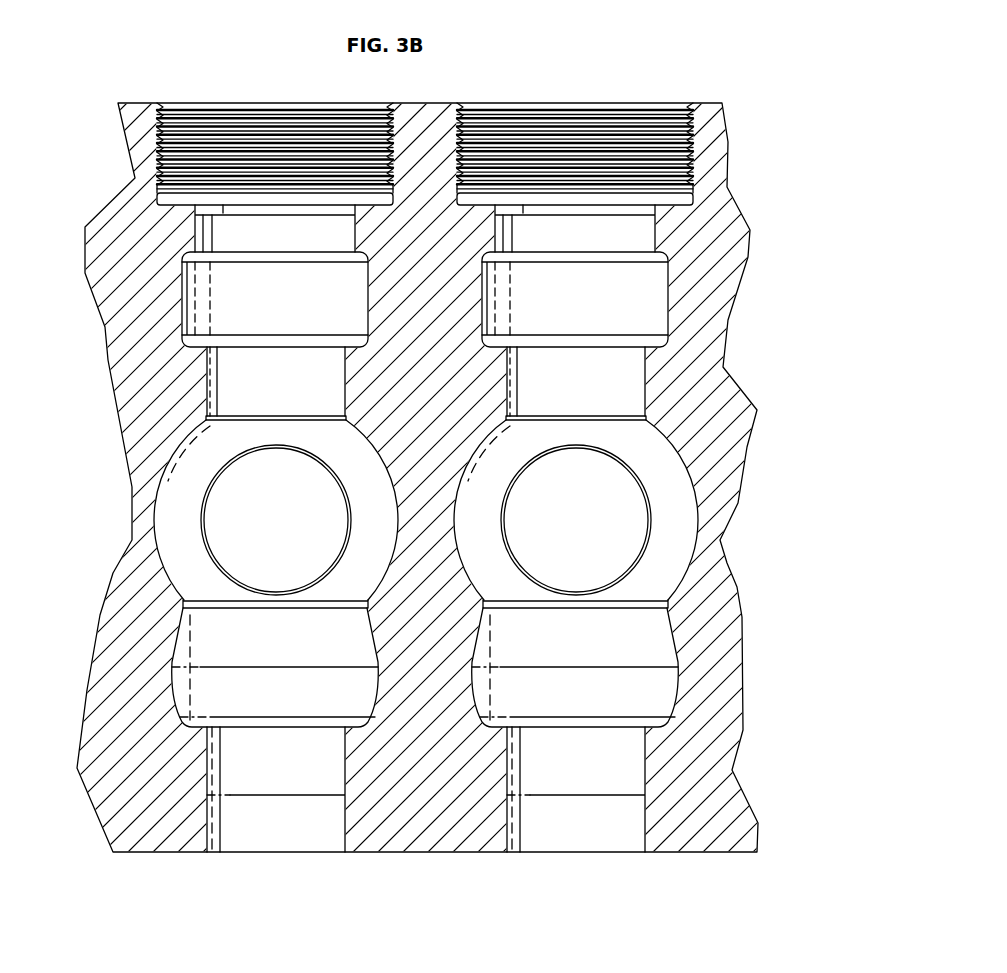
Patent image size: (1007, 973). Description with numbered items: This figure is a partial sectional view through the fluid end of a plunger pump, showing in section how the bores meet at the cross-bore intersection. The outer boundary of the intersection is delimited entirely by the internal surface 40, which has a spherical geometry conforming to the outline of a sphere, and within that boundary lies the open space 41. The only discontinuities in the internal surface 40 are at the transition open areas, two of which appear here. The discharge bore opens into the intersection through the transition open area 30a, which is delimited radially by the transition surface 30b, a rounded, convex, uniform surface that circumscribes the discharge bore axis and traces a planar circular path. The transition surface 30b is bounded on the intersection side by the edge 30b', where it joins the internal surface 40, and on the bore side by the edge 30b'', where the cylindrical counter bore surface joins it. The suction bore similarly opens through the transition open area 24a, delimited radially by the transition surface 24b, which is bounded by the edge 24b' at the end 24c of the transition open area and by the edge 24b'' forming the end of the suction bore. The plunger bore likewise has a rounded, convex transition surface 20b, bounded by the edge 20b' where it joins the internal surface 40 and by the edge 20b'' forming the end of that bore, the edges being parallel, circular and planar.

The transition surface 20b is at (423, 465).
The edge 20b' is at (429, 532).
The edge 20b'' is at (435, 520).
The transition open area 24a is at (263, 620).
The transition surface 24b is at (452, 757).
The edge 24b' is at (427, 748).
The edge 24b'' is at (393, 757).
The end of transition open area 24c is at (504, 587).
The transition open area 30a is at (597, 418).
The transition surface 30b is at (484, 306).
The edge 30b' is at (498, 343).
The edge 30b'' is at (485, 258).
The internal surface 40 is at (360, 449).
The open space 41 is at (455, 103).